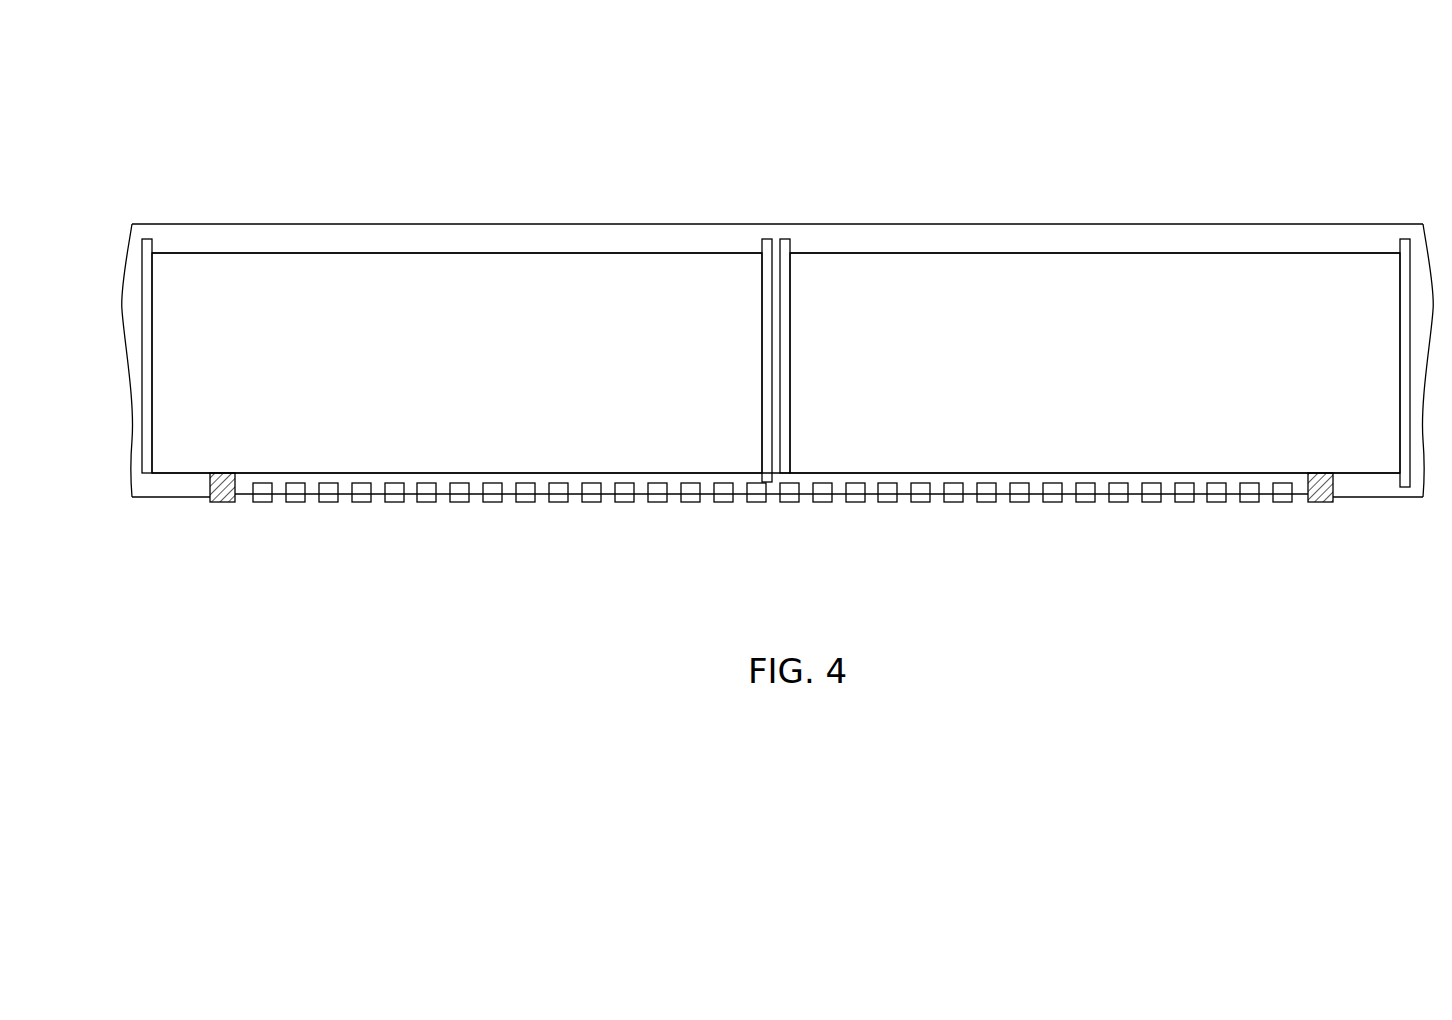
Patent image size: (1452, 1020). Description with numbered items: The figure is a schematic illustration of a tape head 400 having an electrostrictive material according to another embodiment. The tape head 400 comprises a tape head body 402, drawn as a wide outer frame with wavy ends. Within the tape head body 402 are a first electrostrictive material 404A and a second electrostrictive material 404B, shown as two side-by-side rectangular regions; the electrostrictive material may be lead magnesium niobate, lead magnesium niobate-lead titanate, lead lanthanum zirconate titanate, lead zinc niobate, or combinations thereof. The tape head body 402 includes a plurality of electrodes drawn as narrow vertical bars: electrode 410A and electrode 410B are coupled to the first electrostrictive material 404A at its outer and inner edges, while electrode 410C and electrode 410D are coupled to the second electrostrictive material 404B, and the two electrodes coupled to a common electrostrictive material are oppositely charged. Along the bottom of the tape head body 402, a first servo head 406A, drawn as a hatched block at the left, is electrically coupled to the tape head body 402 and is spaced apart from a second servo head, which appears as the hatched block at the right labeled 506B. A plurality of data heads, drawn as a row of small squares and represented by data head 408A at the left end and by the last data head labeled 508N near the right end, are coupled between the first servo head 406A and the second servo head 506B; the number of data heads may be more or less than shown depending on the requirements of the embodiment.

The tape head 400 is at (238, 105).
The tape head body 402 is at (1052, 240).
The first electrostrictive material 404A is at (441, 293).
The second electrostrictive material 404B is at (1196, 293).
The first servo head 406A is at (220, 505).
The data head 408A is at (299, 505).
The electrode 410A is at (147, 239).
The electrode 410B is at (767, 239).
The electrode 410C is at (787, 239).
The electrode 410D is at (1405, 239).
The connector block 506B is at (1323, 505).
The contact pad 508N is at (1246, 505).